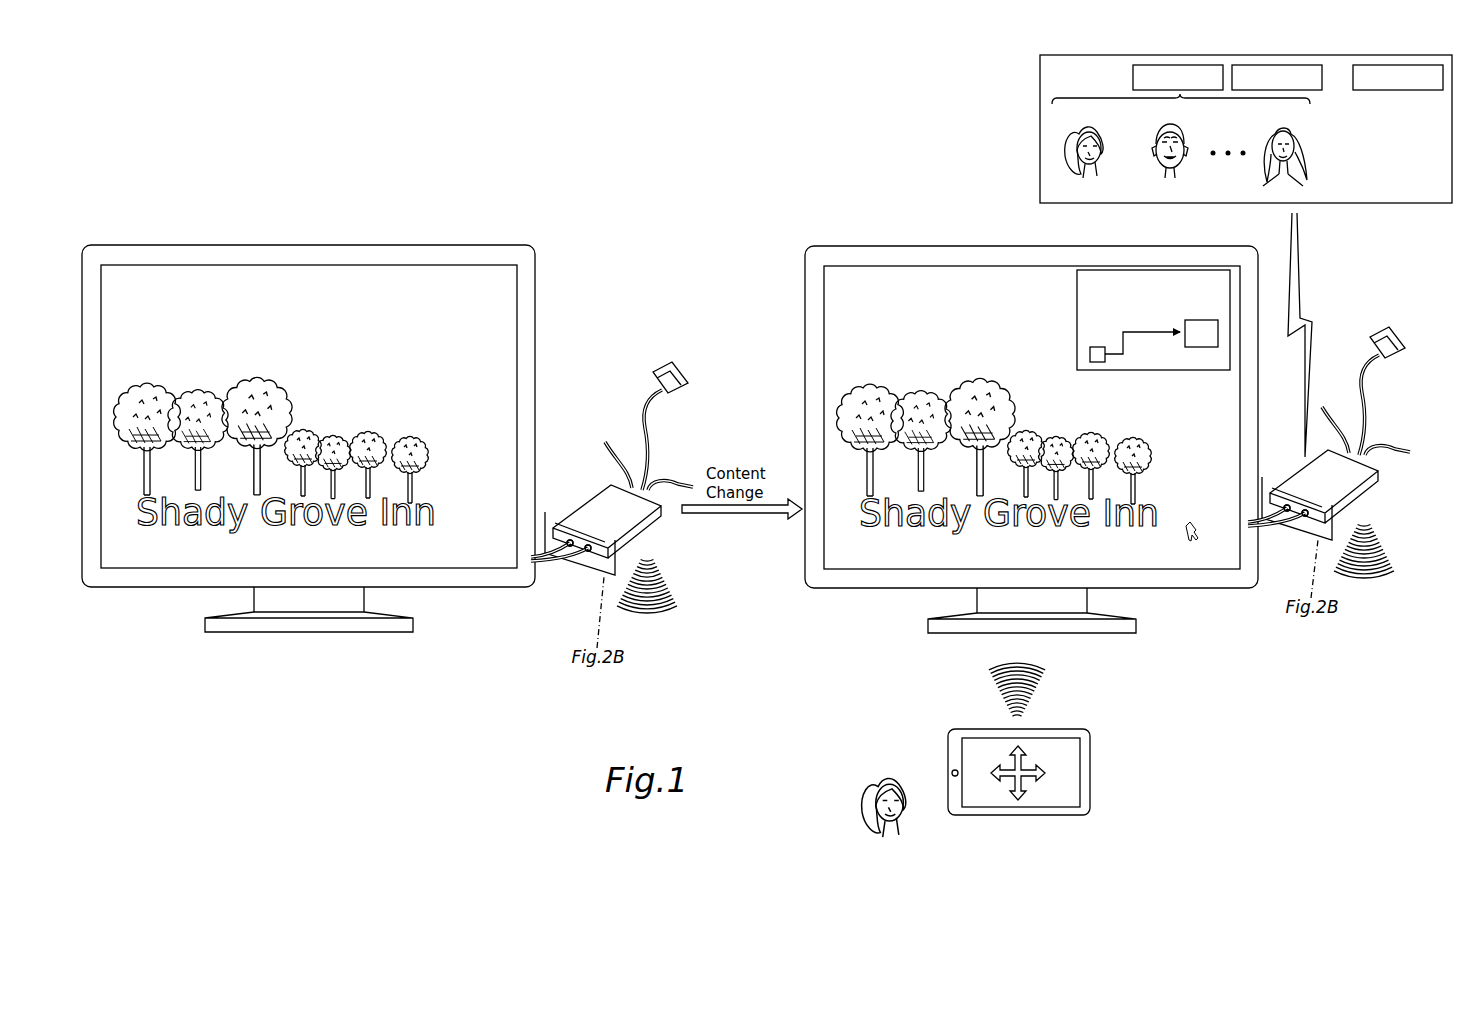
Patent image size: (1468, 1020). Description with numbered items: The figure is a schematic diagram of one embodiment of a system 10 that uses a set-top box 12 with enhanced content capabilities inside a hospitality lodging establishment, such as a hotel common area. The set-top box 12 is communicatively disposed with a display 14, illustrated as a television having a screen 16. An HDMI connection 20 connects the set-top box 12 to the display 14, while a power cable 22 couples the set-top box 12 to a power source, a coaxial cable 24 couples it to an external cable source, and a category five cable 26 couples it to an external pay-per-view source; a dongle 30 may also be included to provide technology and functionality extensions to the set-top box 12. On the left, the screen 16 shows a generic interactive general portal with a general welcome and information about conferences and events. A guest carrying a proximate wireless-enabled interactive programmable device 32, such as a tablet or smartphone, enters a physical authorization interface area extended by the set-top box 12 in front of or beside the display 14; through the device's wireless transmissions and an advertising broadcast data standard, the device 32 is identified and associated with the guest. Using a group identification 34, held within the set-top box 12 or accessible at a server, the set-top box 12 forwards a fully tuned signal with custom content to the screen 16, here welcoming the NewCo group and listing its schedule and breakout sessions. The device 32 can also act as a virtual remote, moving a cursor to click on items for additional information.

The system 10 is at (641, 298).
The set-top box 12 is at (572, 505).
The display 14 is at (132, 242).
The screen 16 is at (192, 283).
The HDMI connection 20 is at (561, 565).
The power cable 22 is at (546, 563).
The coaxial cable 24 is at (617, 455).
The category five (Cat 5) cable 26 is at (672, 480).
The dongle 30 is at (680, 362).
The proximate wireless-enabled interactive programmable device 32 is at (945, 741).
The group identification 34 is at (1040, 120).